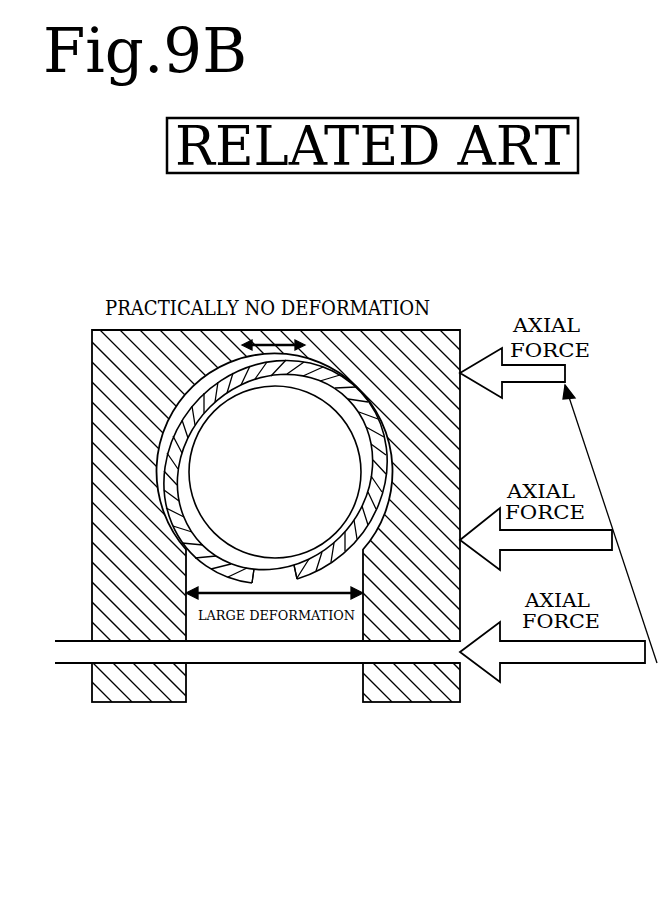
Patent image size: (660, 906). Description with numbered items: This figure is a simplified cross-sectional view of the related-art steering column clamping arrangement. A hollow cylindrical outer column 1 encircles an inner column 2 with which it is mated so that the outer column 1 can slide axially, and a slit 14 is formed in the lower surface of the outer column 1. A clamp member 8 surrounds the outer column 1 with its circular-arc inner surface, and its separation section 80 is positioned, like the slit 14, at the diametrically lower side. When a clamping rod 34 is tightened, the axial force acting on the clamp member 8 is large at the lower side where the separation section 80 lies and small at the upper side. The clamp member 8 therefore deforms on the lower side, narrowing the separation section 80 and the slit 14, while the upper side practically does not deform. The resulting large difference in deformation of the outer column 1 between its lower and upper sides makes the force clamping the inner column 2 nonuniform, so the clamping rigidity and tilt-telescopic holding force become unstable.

The clamp member 8 is at (447, 330).
The outer column 1 is at (338, 382).
The inner column 2 is at (240, 393).
The slit 14 is at (282, 578).
The clamping rod 34 is at (337, 665).
The separation section 80 is at (253, 684).